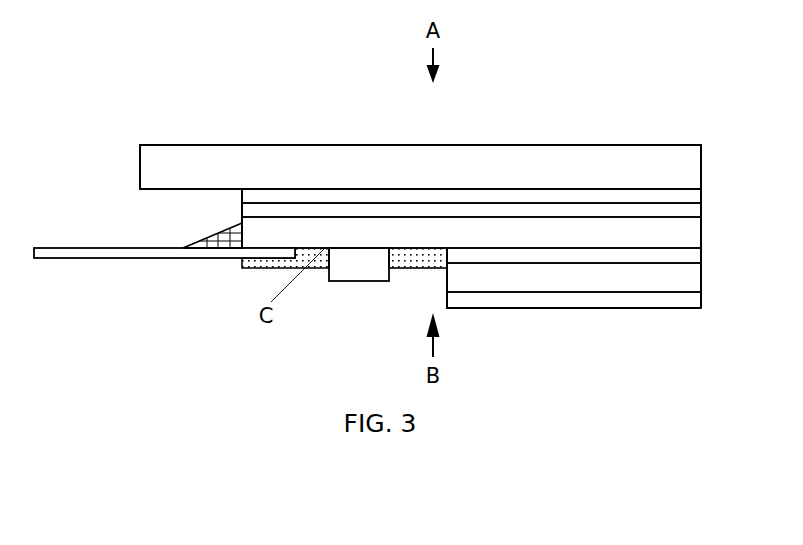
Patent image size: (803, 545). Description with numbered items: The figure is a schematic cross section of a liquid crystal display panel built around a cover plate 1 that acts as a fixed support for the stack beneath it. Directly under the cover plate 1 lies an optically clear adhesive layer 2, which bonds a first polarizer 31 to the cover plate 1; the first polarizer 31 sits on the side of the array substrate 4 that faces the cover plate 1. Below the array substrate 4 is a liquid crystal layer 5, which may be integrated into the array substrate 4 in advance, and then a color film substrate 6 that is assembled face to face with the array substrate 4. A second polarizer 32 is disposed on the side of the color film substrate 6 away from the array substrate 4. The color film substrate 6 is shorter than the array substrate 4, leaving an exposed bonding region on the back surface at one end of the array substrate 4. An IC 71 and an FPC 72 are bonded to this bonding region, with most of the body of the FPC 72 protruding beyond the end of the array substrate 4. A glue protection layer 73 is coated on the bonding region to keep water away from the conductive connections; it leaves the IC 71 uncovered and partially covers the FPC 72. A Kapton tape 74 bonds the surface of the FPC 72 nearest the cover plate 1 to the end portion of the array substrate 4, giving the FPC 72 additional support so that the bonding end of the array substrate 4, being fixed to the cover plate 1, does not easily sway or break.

The cover plate 1 is at (406, 158).
The optically clear adhesive layer 2 is at (448, 198).
The first polarizer 31 is at (488, 209).
The array substrate 4 is at (522, 234).
The liquid crystal layer 5 is at (556, 257).
The color film substrate 6 is at (601, 280).
The second polarizer 32 is at (638, 302).
The IC 71 is at (362, 263).
The FPC 72 is at (153, 253).
The glue protection layer 73 is at (306, 258).
The Kapton tape 74 is at (228, 240).